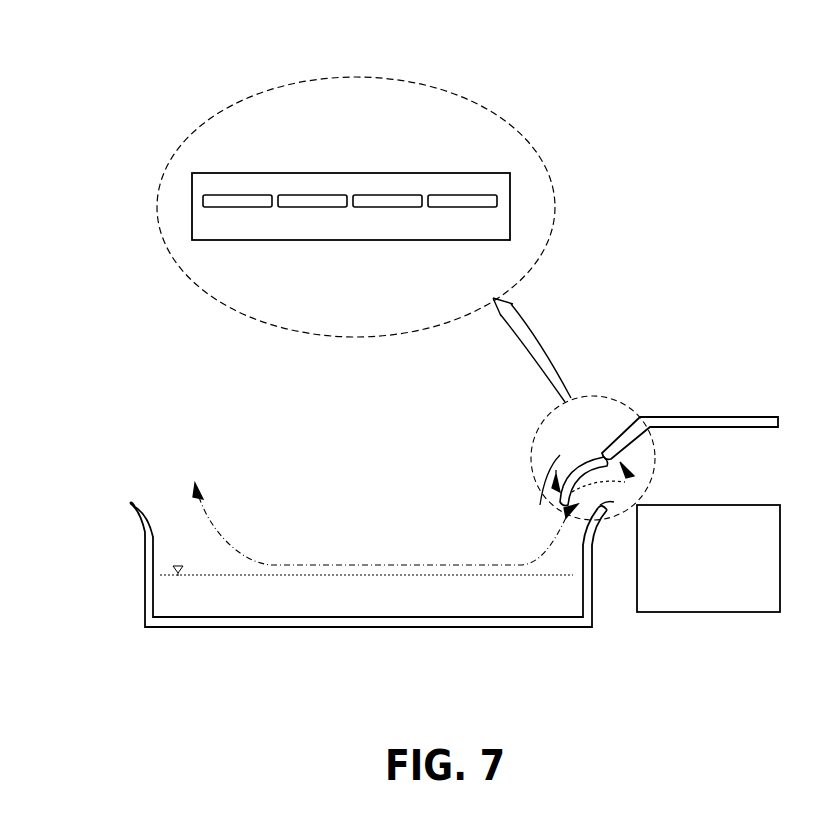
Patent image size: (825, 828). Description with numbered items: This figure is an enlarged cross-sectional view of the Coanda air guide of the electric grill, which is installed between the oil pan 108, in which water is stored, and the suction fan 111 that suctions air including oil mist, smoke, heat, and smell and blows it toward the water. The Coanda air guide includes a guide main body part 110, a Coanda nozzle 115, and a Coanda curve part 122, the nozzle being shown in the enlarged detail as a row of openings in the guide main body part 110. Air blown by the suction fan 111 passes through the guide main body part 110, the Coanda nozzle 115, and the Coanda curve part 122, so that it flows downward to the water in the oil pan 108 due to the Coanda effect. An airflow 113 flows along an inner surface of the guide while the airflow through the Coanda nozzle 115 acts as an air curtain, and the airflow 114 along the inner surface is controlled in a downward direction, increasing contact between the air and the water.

The oil pan 108 is at (422, 627).
The guide main body part 110 is at (252, 172).
The suction fan 111 is at (690, 595).
The airflow 113 is at (577, 463).
The airflow 114 is at (613, 510).
The Coanda nozzle 115 is at (397, 193).
The Coanda curve part 122 is at (230, 220).